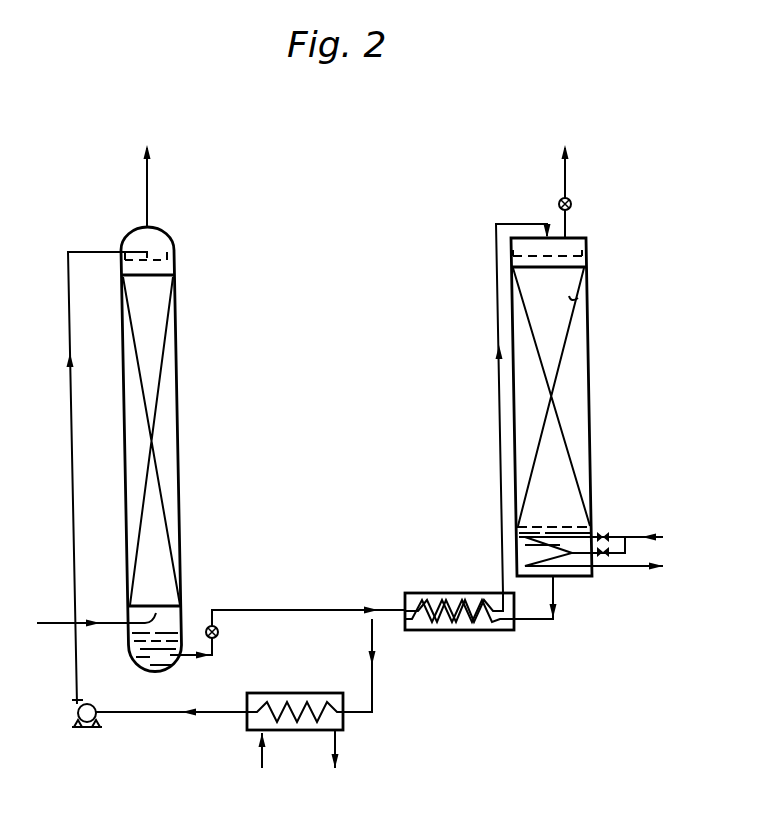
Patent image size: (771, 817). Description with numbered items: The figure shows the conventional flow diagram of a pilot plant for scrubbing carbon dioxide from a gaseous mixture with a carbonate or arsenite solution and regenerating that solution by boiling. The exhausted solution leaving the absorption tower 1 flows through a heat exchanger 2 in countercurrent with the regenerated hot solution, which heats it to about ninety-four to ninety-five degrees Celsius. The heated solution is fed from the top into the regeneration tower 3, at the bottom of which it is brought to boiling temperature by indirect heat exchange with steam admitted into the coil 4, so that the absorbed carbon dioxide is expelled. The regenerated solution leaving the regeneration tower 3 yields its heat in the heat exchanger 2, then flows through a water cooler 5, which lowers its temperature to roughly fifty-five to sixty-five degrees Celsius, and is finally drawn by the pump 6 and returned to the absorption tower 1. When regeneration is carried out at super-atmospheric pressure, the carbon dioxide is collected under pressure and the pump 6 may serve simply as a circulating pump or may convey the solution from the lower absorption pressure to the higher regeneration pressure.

The absorption tower 1 is at (179, 421).
The heat exchanger 2 is at (430, 593).
The regeneration tower 3 is at (592, 376).
The coil 4 is at (582, 571).
The water cooler 5 is at (307, 693).
The pump 6 is at (72, 712).